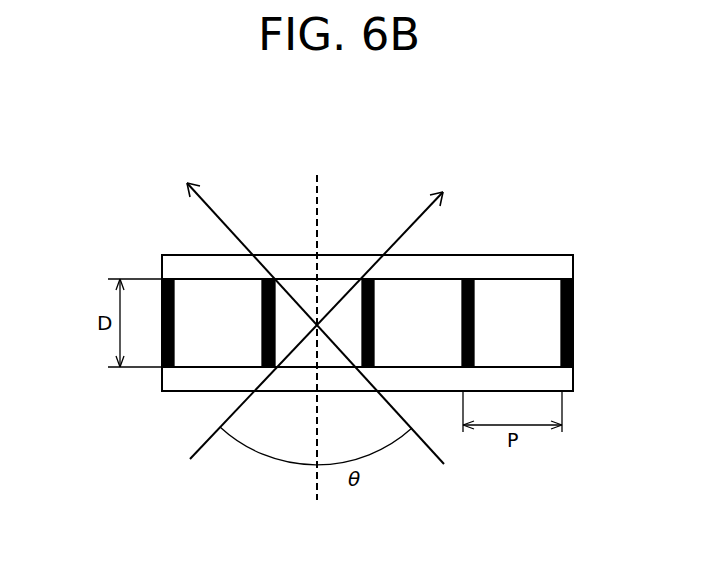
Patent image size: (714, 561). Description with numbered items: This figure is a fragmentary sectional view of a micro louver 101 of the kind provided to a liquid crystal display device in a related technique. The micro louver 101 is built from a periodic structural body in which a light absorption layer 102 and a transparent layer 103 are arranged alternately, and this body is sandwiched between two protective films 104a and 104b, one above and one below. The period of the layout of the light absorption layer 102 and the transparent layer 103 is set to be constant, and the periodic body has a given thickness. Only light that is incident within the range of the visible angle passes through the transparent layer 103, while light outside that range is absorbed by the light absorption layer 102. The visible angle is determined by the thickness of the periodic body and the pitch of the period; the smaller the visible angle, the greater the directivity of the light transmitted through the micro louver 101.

The micro louver 101 is at (452, 255).
The light absorption layer 102 is at (162, 300).
The transparent layer 103 is at (523, 295).
The protective film 104a is at (562, 267).
The protective film 104b is at (163, 378).